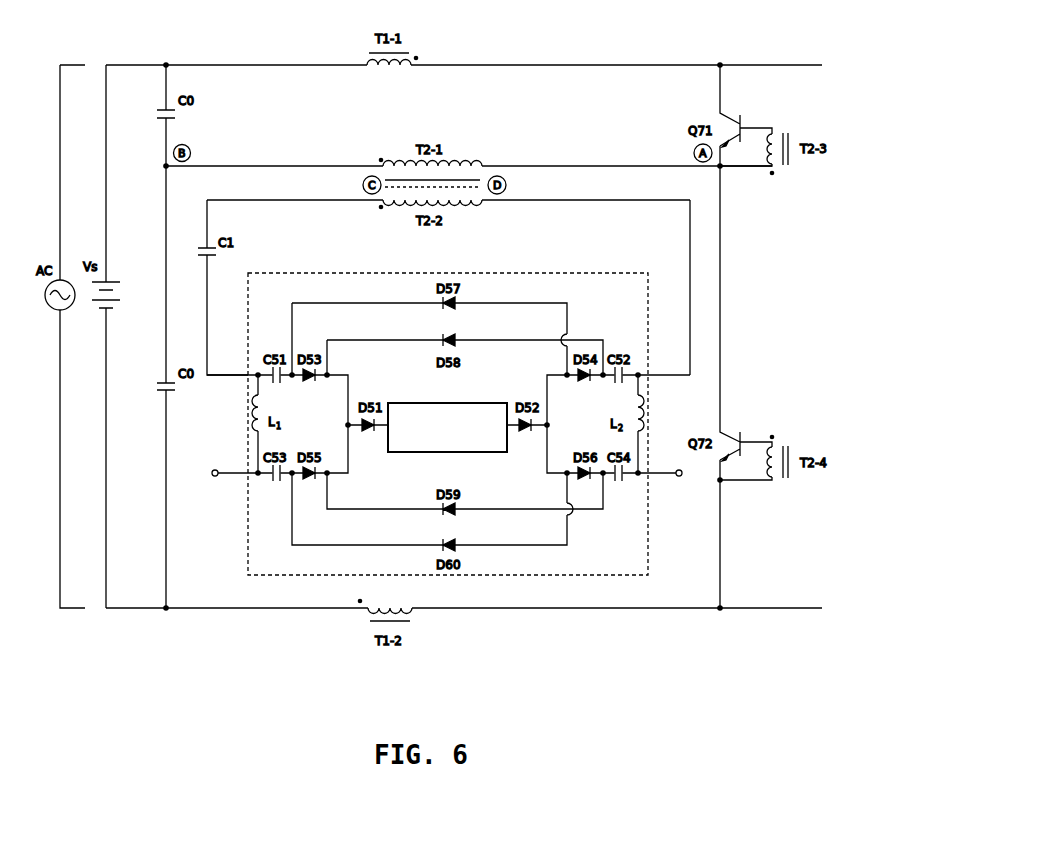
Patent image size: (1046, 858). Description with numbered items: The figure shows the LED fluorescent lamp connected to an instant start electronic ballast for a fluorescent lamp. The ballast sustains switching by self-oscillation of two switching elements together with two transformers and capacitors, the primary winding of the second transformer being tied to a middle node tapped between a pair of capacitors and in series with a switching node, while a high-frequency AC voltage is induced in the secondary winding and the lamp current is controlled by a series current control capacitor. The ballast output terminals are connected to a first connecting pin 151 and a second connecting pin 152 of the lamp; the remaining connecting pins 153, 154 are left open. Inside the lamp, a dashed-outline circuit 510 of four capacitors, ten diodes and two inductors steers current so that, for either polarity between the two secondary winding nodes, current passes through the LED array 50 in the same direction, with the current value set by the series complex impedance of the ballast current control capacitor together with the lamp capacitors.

The LED array 50 is at (448, 403).
The first connecting pin 151 is at (232, 367).
The second connecting pin 152 is at (664, 367).
The third terminal (open) 153 is at (219, 474).
The fourth terminal (open) 154 is at (672, 475).
The LED driving circuit 510 is at (512, 273).